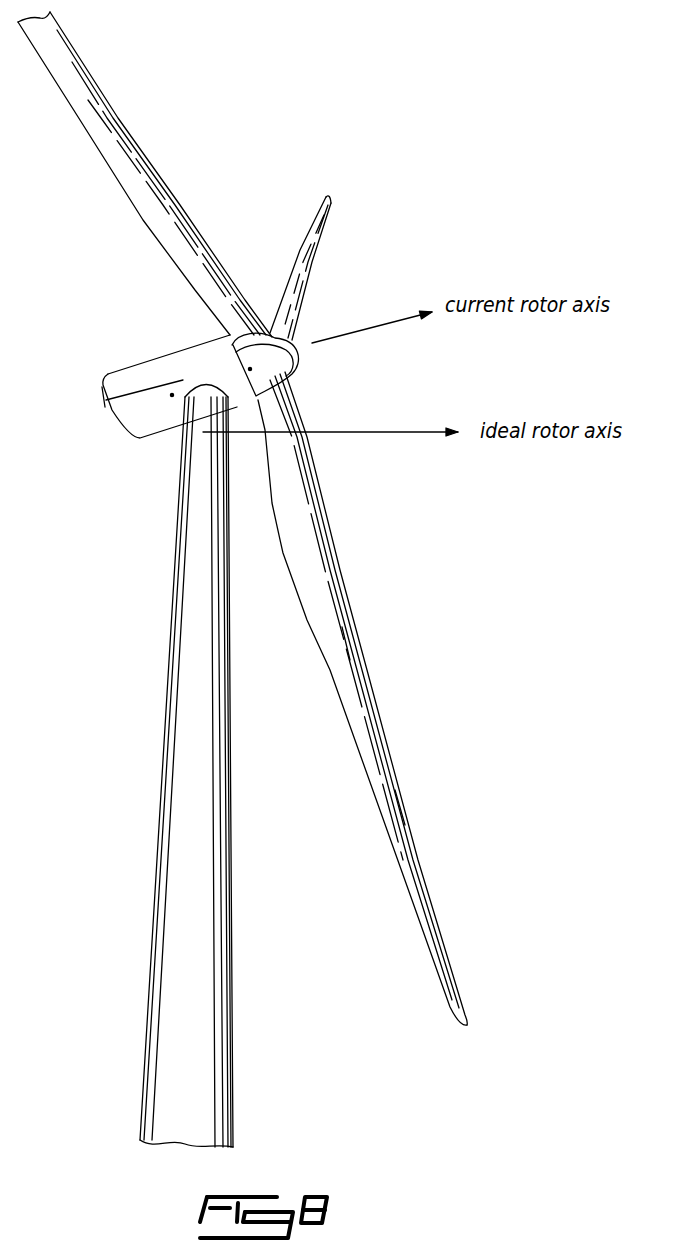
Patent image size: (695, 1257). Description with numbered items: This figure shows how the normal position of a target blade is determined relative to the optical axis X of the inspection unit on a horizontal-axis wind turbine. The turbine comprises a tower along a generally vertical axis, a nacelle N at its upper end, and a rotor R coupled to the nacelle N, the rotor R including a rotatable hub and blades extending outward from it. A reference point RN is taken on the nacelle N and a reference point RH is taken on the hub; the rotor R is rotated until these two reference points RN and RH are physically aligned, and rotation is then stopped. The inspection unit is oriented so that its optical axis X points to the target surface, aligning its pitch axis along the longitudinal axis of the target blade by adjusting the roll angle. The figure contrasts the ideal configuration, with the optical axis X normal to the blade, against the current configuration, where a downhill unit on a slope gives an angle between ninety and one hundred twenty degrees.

The nacelle N is at (130, 363).
The rotor R is at (345, 225).
The reference point on the hub RH is at (298, 343).
The reference point on the nacelle RN is at (157, 410).
The optical axis of the inspection unit X is at (200, 598).